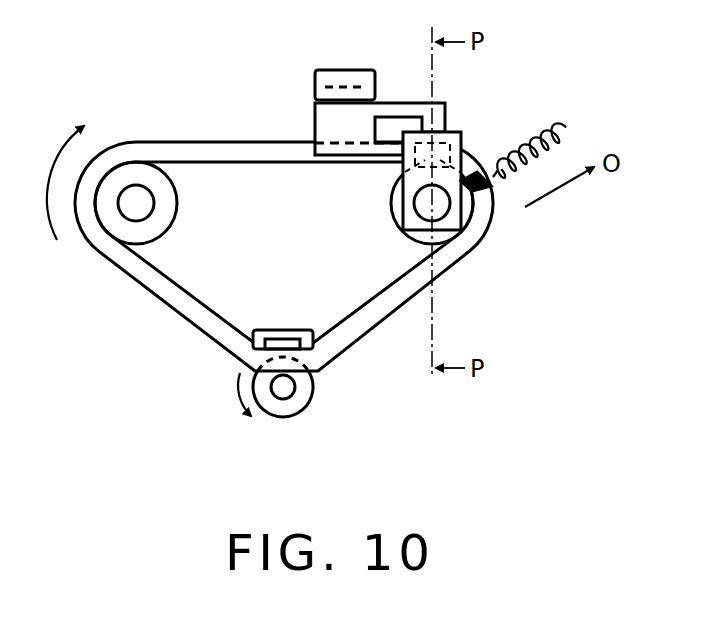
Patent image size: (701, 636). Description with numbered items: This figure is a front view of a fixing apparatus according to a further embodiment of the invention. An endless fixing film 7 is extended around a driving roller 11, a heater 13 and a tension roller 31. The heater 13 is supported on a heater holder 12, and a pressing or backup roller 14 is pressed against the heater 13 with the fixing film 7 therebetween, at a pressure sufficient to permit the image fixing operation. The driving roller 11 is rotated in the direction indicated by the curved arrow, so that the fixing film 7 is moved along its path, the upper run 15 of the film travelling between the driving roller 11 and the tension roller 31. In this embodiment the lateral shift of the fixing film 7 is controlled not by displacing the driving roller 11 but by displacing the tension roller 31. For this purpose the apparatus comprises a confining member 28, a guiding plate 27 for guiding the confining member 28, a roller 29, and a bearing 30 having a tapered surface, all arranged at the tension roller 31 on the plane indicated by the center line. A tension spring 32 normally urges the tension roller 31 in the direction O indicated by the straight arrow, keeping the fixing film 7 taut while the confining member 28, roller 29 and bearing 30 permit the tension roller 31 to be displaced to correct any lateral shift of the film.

The fixing film 7 is at (185, 312).
The driving roller 11 is at (118, 230).
The heater holder 12 is at (290, 335).
The heater 13 is at (305, 384).
The backup roller 14 is at (287, 410).
The belt upper run 15 is at (203, 153).
The guiding plate 27 is at (372, 82).
The confining member 28 is at (325, 128).
The roller 29 is at (453, 125).
The bearing 30 is at (465, 153).
The tension roller 31 is at (395, 203).
The tension spring 32 is at (540, 138).